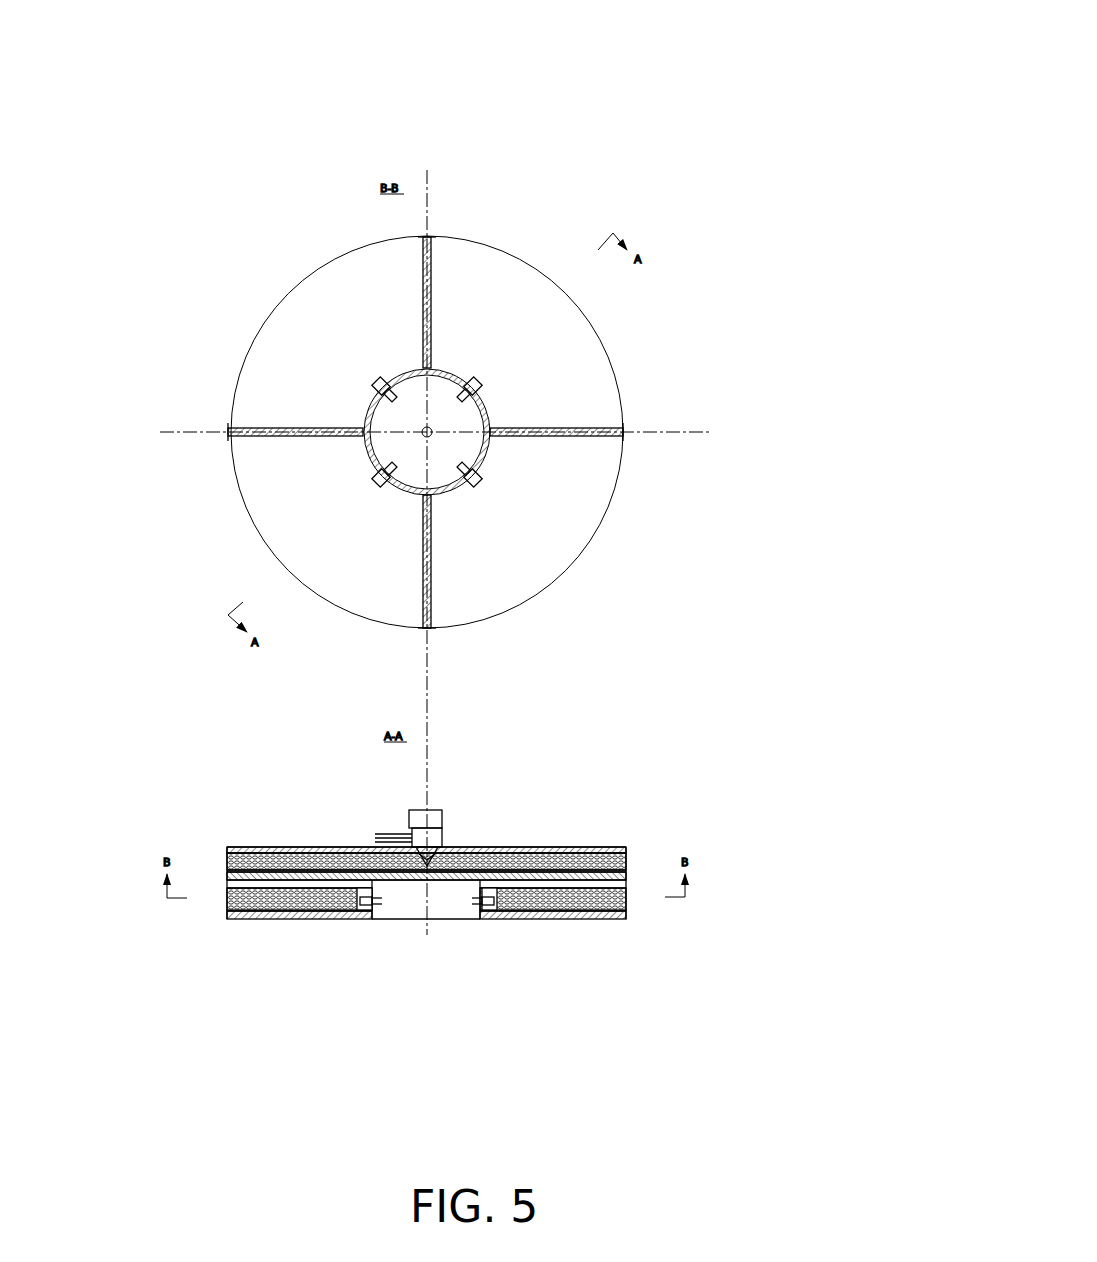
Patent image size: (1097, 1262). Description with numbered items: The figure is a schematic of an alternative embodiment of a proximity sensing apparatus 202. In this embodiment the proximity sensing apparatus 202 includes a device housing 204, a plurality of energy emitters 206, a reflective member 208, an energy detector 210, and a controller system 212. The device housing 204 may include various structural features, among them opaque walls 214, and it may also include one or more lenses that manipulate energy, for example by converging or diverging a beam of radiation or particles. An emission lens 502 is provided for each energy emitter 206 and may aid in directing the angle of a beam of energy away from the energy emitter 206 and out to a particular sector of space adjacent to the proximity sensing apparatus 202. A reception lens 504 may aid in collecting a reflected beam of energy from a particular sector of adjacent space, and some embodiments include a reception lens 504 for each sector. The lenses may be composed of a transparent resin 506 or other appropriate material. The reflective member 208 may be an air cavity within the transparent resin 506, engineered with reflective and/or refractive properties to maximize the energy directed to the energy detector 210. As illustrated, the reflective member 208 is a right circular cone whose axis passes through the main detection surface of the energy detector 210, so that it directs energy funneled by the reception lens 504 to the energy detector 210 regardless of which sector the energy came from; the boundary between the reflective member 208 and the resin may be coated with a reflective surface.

The proximity sensing apparatus 202 is at (578, 190).
The device housing 204 is at (438, 234).
The energy emitters 206 is at (478, 473).
The reflective member 208 is at (440, 847).
The energy detector 210 is at (445, 825).
The controller system 212 is at (443, 813).
The opaque walls 214 is at (430, 572).
The emission lens 502 is at (627, 917).
The reception lens 504 is at (612, 847).
The transparent resin 506 is at (311, 871).